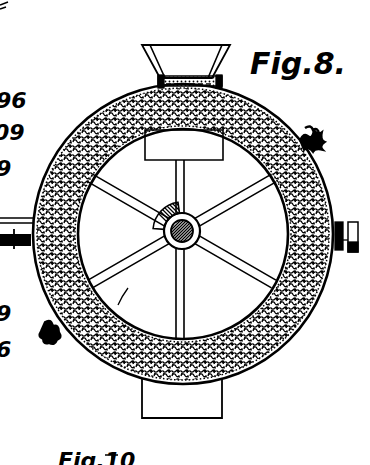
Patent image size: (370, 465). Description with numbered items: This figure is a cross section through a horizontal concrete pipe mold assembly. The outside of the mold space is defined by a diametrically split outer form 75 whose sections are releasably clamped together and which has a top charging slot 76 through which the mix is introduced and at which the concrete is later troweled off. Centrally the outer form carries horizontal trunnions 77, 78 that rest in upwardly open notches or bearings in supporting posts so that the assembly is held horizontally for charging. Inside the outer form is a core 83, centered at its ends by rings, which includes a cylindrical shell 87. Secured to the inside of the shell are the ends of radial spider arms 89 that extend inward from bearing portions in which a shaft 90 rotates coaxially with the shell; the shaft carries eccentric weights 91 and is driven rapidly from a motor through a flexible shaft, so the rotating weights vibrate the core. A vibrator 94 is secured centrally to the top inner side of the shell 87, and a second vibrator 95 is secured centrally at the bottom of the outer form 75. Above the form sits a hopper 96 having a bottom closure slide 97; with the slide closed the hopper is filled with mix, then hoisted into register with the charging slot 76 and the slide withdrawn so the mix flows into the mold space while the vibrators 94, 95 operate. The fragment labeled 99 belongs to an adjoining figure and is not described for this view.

In FIG. 8, the outer form 75 is at (111, 360).
In FIG. 8, the top charging slot 76 is at (159, 89).
In FIG. 8, the horizontal trunnion 77 is at (12, 249).
In FIG. 8, the horizontal trunnion 78 is at (346, 256).
In FIG. 8, the core 83 is at (266, 361).
In FIG. 8, the cylindrical shell 87 is at (139, 302).
In FIG. 8, the radial spider arms 89 is at (205, 288).
In FIG. 8, the shaft 90 is at (202, 231).
In FIG. 8, the eccentric weights 91 is at (165, 210).
In FIG. 8, the vibrator 94 is at (200, 161).
In FIG. 8, the vibrator 95 is at (222, 403).
In FIG. 8, the hopper 96 is at (143, 62).
In FIG. 8, the bottom closure slide 97 is at (190, 77).
In FIG. 10, the element 99 is at (128, 462).